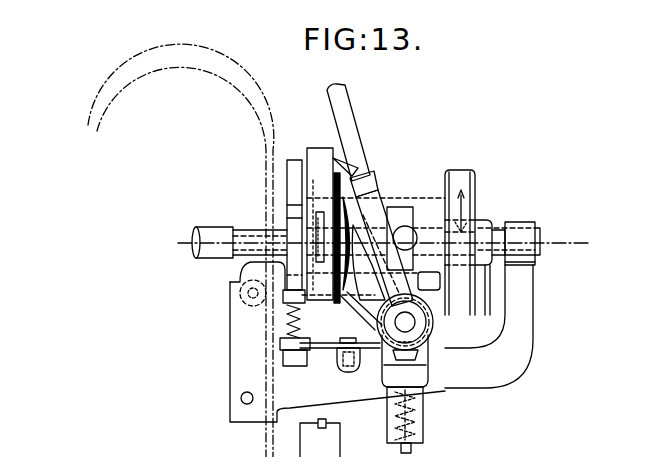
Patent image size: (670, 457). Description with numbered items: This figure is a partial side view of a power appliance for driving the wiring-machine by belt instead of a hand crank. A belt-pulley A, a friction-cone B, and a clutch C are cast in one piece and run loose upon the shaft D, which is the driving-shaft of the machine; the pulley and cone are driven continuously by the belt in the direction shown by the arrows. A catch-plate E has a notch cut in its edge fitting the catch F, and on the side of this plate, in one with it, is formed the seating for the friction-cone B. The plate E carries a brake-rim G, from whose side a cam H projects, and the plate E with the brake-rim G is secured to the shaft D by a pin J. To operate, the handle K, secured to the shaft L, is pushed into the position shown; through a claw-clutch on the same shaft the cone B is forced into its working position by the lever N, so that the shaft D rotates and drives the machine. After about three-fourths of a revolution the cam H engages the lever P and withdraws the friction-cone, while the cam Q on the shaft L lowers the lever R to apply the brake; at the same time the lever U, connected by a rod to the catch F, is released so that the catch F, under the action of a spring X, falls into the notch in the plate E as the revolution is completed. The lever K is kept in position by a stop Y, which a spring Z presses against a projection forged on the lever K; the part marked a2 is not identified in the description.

The belt-pulley A is at (460, 242).
The friction-cone B is at (352, 207).
The clutch C is at (400, 237).
The shaft D is at (239, 242).
The catch-plate E is at (294, 231).
The catch F is at (286, 213).
The brake-rim G is at (320, 224).
The cam H is at (356, 176).
The pin J is at (319, 237).
The handle K is at (348, 132).
The shaft L is at (415, 322).
The lever N is at (405, 238).
The lever P is at (368, 262).
The cam Q is at (429, 289).
The lever R is at (361, 311).
The lever U is at (361, 348).
The spring X is at (288, 323).
The stop Y is at (428, 365).
The spring Z is at (406, 420).
The pawl a2 is at (416, 352).